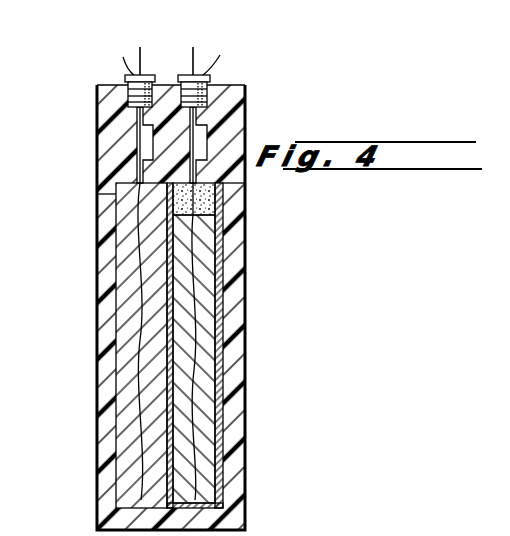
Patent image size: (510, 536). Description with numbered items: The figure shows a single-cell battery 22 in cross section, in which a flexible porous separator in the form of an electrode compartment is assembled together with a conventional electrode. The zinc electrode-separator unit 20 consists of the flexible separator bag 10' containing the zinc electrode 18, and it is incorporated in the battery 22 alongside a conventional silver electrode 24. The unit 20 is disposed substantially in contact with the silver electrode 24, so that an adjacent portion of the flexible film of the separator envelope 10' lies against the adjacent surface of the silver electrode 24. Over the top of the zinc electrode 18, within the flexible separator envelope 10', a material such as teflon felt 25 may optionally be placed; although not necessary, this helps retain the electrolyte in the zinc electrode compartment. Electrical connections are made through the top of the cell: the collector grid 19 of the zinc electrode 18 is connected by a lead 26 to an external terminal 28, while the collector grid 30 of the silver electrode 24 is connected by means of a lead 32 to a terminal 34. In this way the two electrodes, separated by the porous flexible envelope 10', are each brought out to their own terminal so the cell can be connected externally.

The flexible separator bag 10' is at (212, 307).
The zinc electrode 18 is at (203, 316).
The collector grid 19 is at (197, 373).
The zinc electrode-separator unit 20 is at (230, 268).
The battery 22 is at (256, 187).
The silver electrode 24 is at (128, 325).
The teflon felt 25 is at (218, 212).
The lead 26 is at (200, 137).
The external terminal 28 is at (221, 68).
The collector grid 30 is at (138, 370).
The lead 32 is at (135, 145).
The terminal 34 is at (121, 67).